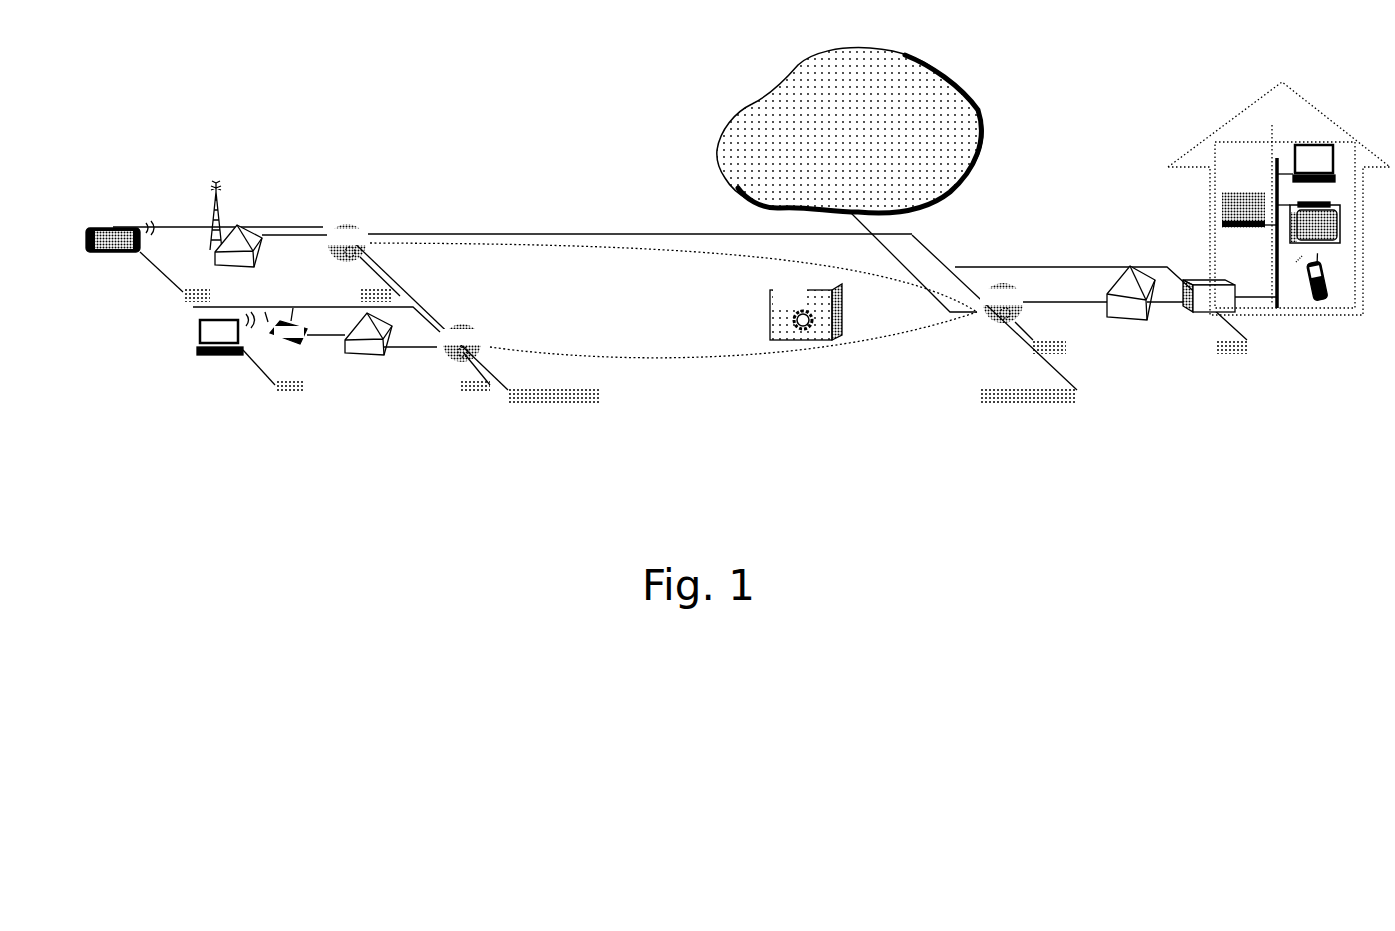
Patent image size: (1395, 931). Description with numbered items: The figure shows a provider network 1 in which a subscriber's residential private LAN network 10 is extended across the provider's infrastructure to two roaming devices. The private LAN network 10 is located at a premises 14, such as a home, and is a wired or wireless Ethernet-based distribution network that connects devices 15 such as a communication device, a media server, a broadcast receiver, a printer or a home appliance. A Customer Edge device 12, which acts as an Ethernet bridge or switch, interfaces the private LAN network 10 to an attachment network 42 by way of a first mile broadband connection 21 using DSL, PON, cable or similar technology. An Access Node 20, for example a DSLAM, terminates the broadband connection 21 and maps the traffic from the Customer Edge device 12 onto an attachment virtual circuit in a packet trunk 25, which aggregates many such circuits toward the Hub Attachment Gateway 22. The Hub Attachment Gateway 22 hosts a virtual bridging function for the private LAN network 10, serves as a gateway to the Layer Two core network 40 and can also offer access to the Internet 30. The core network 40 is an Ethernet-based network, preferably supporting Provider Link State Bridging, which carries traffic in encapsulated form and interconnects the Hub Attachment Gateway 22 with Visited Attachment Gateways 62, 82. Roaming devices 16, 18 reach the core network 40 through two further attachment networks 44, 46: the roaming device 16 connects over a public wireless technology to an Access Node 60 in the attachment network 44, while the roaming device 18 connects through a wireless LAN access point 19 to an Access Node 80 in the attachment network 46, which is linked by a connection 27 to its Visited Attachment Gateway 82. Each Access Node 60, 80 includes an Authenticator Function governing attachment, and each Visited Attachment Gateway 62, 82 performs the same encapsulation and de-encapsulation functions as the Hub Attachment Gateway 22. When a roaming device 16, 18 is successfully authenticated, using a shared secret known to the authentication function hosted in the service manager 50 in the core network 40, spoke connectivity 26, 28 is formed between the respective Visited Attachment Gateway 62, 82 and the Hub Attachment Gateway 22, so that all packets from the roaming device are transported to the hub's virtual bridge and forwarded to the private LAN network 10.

The provider network 1 is at (686, 223).
The private LAN network 10 is at (1265, 142).
The Customer Edge device 12 is at (1204, 280).
The premises 14 is at (1279, 312).
The devices 15 is at (1313, 142).
The roaming device 16 is at (103, 255).
The roaming device 18 is at (216, 356).
The wireless LAN access point 19 is at (292, 346).
The Access Node 20 is at (1131, 275).
The first mile broadband connection 21 is at (1170, 304).
The Hub Attachment Gateway 22 is at (1011, 286).
The packet trunk 25 is at (1078, 301).
The spoke connectivity 26 is at (819, 272).
The link between AN and VAG 27 is at (412, 347).
The spoke connectivity 28 is at (678, 359).
The Internet 30 is at (741, 176).
The core network 40 is at (855, 389).
The attachment network 42 is at (1090, 266).
The attachment network 44 is at (183, 293).
The attachment network 46 is at (275, 384).
The service manager (SM) 50 is at (770, 303).
The Access Node 60 is at (256, 265).
The Visited Attachment Gateway 62 is at (352, 226).
The Access Node 80 is at (379, 355).
The Visited Attachment Gateway 82 is at (461, 328).